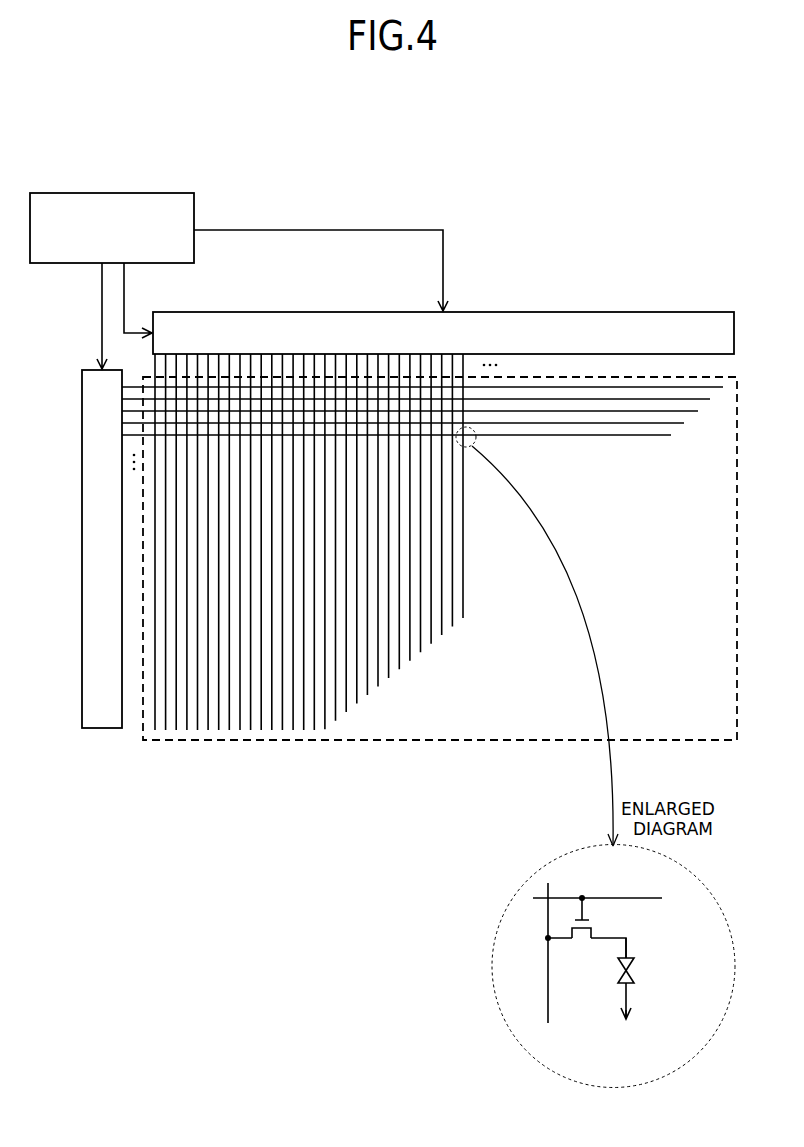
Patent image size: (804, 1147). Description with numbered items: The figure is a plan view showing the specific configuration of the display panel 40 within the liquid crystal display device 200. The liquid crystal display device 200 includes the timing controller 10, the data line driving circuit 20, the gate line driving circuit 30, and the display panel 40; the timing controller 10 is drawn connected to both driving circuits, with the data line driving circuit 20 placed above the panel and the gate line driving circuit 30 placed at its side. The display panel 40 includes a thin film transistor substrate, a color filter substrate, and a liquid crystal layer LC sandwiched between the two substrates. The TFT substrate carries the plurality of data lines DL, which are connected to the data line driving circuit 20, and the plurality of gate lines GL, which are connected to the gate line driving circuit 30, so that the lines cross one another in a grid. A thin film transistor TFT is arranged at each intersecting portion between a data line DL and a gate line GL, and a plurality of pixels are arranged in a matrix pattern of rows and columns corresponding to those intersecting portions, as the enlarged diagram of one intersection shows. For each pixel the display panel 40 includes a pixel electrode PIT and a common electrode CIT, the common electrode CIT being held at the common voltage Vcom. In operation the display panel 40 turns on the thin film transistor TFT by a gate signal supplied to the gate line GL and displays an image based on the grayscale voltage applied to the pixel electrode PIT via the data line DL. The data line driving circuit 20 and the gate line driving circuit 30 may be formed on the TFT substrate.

The liquid crystal display device 200 is at (630, 165).
The timing controller 10 is at (143, 194).
The data line driving circuit 20 is at (597, 312).
The gate line driving circuit 30 is at (81, 495).
The display panel 40 is at (650, 740).
The data line DL is at (464, 580).
The gate line GL is at (577, 438).
The thin film transistor TFT is at (587, 930).
The liquid crystal layer LC is at (641, 970).
The pixel electrode PIT is at (628, 955).
The common electrode CIT is at (630, 985).
The common voltage Vcom is at (623, 1028).